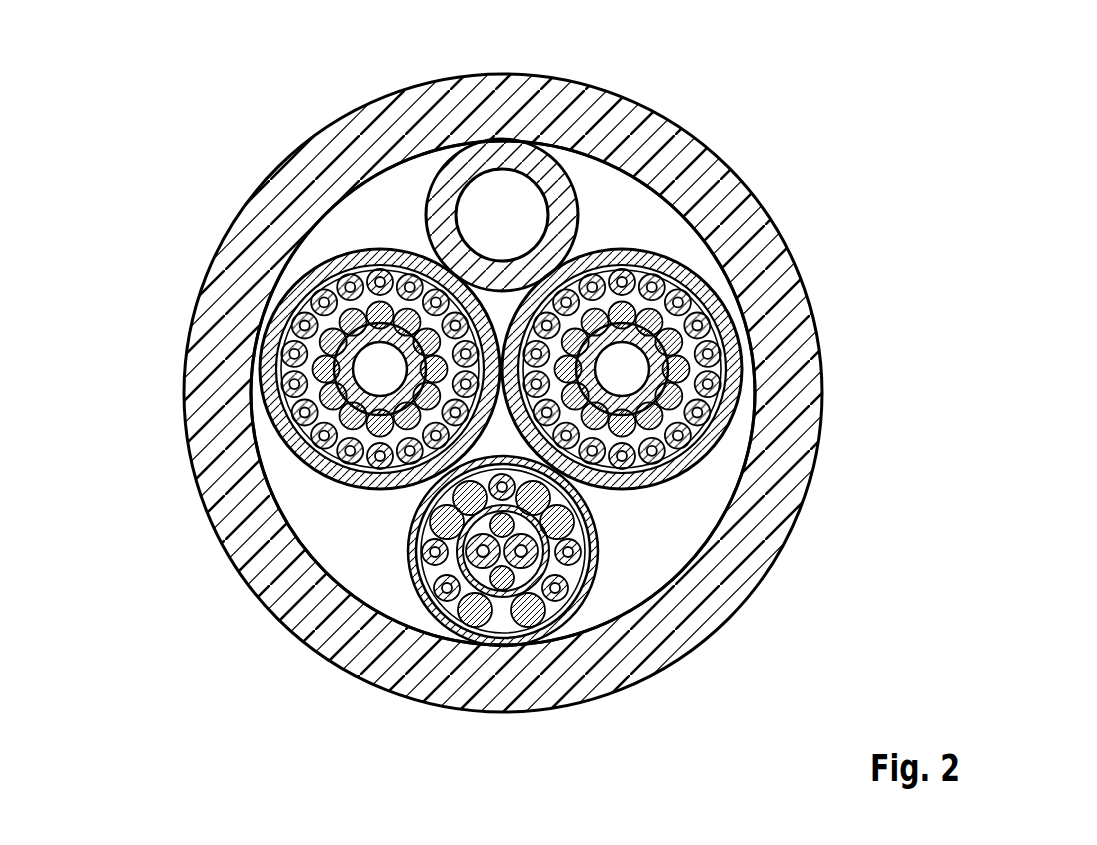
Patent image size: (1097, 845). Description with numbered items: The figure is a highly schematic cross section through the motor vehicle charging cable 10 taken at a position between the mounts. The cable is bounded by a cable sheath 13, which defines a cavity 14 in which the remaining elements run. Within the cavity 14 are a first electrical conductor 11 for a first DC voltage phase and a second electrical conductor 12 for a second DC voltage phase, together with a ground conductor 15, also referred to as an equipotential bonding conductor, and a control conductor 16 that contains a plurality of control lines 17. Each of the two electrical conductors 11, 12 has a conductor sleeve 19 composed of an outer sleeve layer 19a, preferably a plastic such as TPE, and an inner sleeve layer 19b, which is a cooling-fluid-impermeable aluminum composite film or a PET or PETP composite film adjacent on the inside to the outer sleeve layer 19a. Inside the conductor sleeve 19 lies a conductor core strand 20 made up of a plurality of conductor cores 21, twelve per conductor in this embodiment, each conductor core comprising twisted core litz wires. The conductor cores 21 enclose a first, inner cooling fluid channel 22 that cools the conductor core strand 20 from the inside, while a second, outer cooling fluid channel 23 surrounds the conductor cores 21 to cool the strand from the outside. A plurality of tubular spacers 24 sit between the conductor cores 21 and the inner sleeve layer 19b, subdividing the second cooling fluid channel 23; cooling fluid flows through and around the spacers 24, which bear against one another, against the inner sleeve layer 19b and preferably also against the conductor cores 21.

The motor vehicle charging cable 10 is at (506, 392).
The first electrical conductor 11 is at (287, 462).
The second electrical conductor 12 is at (715, 465).
The cable sheath 13 is at (537, 97).
The cavity 14 is at (590, 186).
The ground conductor 15 is at (430, 166).
The control conductor 16 is at (474, 616).
The control lines 17 is at (445, 590).
The conductor sleeve 19 is at (506, 369).
The outer sleeve layer 19a is at (298, 297).
The inner sleeve layer 19b is at (293, 330).
The conductor core strand 20 is at (308, 388).
The conductor cores 21 is at (380, 318).
The first cooling fluid channel 22 is at (377, 405).
The second cooling fluid channel 23 is at (298, 433).
The tubular spacers 24 is at (410, 275).